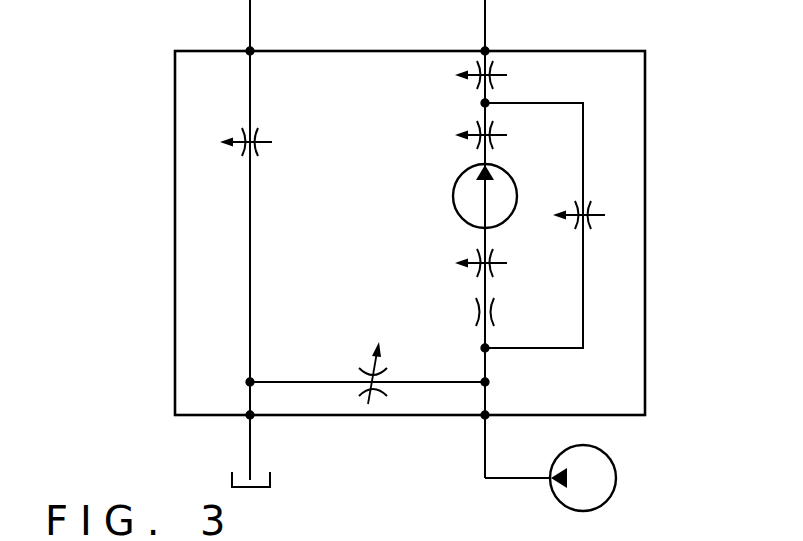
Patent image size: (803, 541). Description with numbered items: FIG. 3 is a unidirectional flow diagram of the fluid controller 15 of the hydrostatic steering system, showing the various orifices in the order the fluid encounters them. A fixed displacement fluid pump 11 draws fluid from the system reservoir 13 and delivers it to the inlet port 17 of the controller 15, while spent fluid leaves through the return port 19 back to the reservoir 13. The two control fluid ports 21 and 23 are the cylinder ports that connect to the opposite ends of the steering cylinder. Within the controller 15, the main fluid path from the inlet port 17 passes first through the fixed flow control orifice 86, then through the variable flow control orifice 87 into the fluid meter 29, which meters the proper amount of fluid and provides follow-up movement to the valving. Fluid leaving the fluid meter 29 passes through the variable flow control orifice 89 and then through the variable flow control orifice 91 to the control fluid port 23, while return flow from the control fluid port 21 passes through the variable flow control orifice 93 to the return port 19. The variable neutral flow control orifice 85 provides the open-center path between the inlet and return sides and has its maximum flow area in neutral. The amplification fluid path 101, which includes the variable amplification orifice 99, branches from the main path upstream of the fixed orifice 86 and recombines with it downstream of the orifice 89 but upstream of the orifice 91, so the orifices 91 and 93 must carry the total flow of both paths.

The fluid pump 11 is at (616, 478).
The system reservoir 13 is at (270, 480).
The fluid controller 15 is at (662, 78).
The inlet port 17 is at (485, 415).
The return port 19 is at (250, 415).
The control fluid port 21 is at (250, 51).
The control fluid port 23 is at (485, 51).
The fluid meter 29 is at (455, 208).
The variable neutral flow control orifice 85 is at (356, 372).
The fixed flow control orifice 86 is at (473, 313).
The variable flow control orifice 87 is at (497, 270).
The variable flow control orifice 89 is at (498, 140).
The variable flow control orifice 91 is at (497, 82).
The variable flow control orifice 93 is at (266, 152).
The variable amplification orifice 99 is at (592, 212).
The amplification fluid path 101 is at (583, 316).